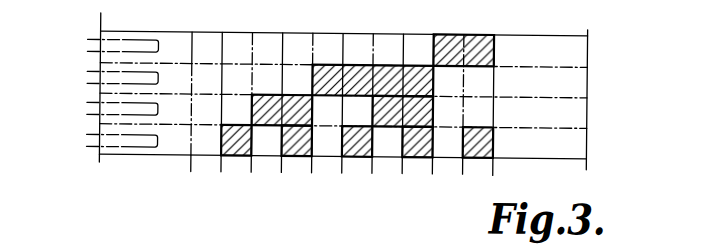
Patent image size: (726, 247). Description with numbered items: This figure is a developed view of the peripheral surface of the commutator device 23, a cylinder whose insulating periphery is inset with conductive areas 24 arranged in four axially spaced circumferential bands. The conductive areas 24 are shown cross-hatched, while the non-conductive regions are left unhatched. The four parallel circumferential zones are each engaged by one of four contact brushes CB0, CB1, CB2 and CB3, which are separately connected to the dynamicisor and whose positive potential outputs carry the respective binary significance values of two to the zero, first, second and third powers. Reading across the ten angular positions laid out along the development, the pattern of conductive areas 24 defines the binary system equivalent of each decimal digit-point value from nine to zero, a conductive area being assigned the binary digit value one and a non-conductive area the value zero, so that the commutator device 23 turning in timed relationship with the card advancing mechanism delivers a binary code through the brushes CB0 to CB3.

The commutator device 23 is at (271, 32).
The conductive areas 24 is at (277, 96).
The contact brush CB3 is at (95, 42).
The contact brush CB2 is at (90, 86).
The contact brush CB1 is at (88, 105).
The contact brush CB0 is at (90, 137).